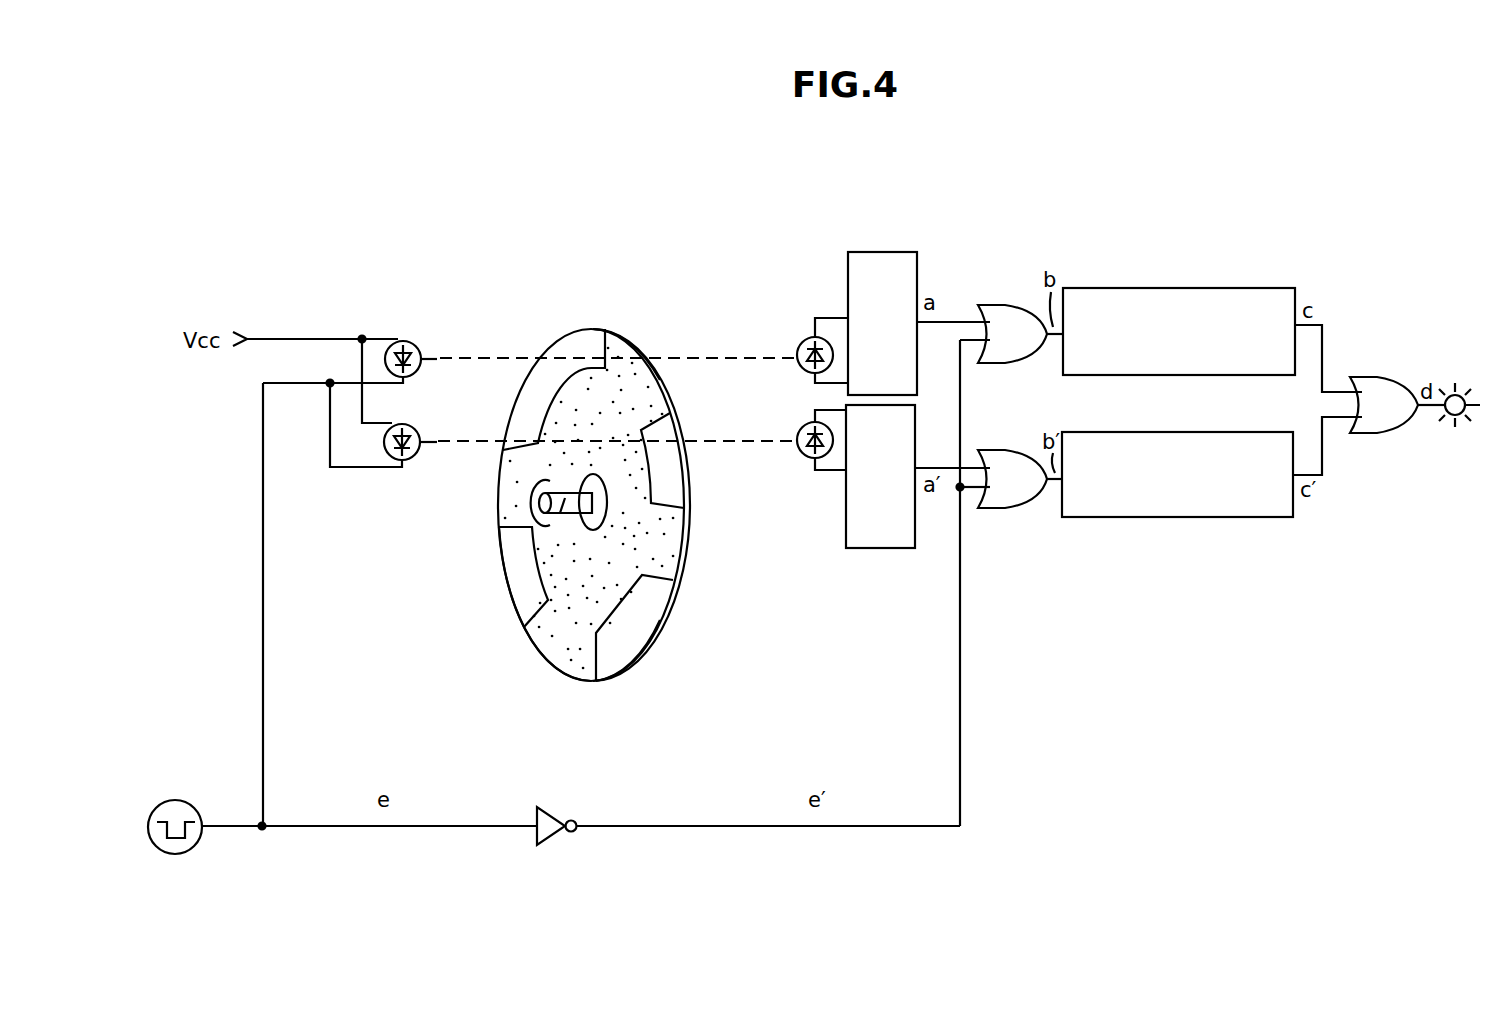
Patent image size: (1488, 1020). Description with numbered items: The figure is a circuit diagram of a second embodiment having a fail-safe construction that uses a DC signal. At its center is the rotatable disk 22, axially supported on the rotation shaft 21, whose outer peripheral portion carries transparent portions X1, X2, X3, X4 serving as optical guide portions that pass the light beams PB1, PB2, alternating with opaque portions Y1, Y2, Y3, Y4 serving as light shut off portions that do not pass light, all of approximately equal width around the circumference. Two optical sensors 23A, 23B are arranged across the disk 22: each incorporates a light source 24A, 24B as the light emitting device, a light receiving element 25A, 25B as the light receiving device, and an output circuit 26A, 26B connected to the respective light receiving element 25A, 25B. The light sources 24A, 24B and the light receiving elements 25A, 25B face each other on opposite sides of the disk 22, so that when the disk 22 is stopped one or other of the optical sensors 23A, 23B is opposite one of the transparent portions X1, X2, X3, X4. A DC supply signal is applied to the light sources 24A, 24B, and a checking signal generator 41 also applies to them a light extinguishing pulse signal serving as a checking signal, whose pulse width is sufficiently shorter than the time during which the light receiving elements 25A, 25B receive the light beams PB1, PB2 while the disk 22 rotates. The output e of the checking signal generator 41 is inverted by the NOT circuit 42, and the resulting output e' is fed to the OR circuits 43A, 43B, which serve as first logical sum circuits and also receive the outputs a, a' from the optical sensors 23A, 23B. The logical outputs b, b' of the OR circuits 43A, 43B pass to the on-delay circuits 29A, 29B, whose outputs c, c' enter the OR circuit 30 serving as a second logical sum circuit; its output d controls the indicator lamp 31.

The rotation shaft 21 is at (553, 523).
The rotatable disk 22 is at (595, 508).
The optical sensor 23A is at (854, 287).
The optical sensor 23B is at (843, 524).
The light source 24A is at (411, 342).
The light source 24B is at (386, 465).
The light receiving element 25A is at (803, 337).
The light receiving element 25B is at (803, 457).
The output circuit 26A is at (870, 252).
The output circuit 26B is at (881, 509).
The on-delay circuit 29A is at (1152, 292).
The on-delay circuit 29B is at (1225, 520).
The OR circuit 30 is at (1368, 387).
The indicator lamp 31 is at (1458, 393).
The checking signal generator 41 is at (190, 813).
The NOT circuit 42 is at (562, 803).
The OR circuit 43A is at (995, 313).
The OR circuit 43B is at (1000, 510).
The transparent portion X1 is at (668, 484).
The transparent portion X2 is at (602, 688).
The transparent portion X3 is at (520, 597).
The transparent portion X4 is at (592, 323).
The opaque portion Y1 is at (667, 580).
The opaque portion Y2 is at (563, 660).
The opaque portion Y3 is at (497, 527).
The opaque portion Y4 is at (628, 333).
The light beam PB1 is at (445, 356).
The light beam PB2 is at (433, 440).